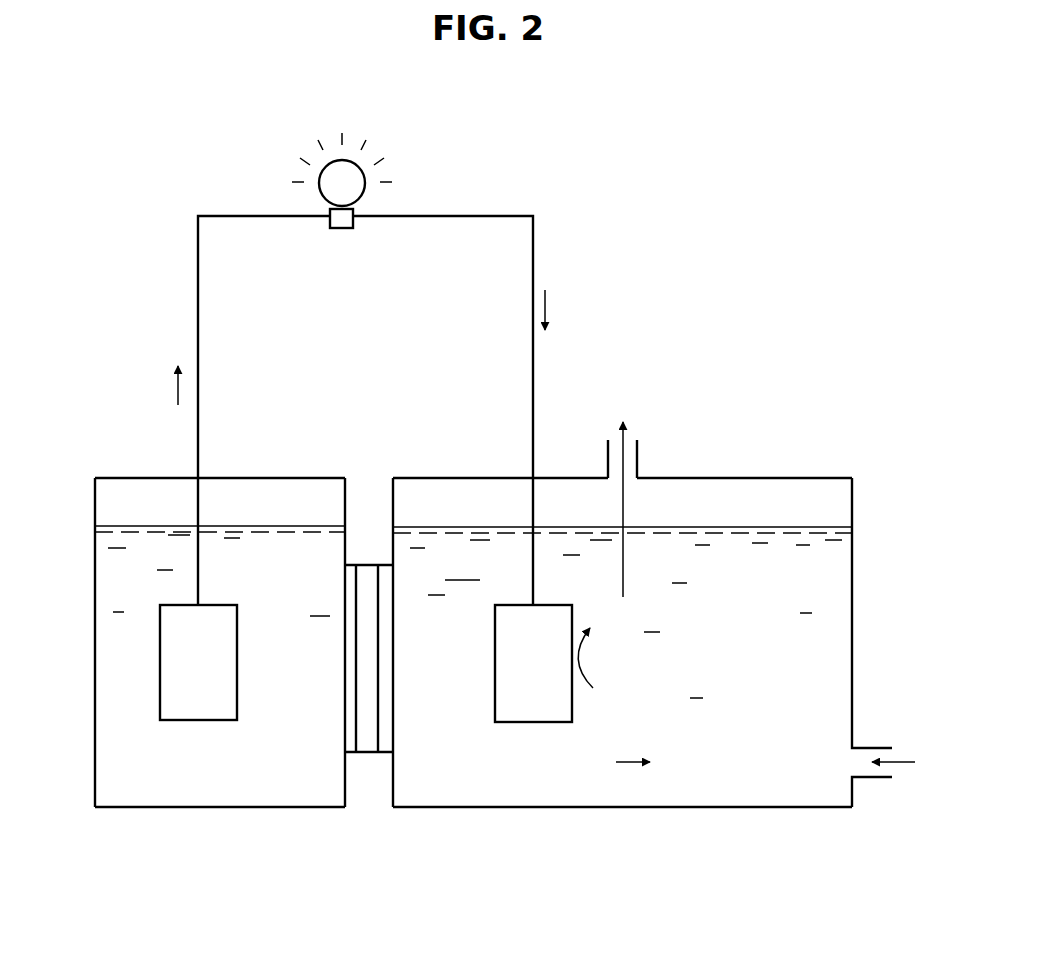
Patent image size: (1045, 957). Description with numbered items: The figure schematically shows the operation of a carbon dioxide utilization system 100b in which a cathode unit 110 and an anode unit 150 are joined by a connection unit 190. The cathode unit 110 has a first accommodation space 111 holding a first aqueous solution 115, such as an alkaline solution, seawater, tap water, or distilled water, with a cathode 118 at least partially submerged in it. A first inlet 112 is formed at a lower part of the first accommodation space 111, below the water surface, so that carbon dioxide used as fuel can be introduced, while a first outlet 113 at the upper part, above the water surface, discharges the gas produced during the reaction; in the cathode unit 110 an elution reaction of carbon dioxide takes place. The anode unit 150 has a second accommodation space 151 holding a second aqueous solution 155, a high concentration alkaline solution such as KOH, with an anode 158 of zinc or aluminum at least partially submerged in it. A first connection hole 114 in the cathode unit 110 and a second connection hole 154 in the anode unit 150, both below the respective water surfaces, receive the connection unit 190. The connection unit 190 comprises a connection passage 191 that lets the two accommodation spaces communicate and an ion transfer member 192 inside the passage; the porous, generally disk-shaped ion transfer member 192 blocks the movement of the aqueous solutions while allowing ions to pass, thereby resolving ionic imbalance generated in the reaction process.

The carbon dioxide utilization system 100b is at (826, 378).
The cathode unit 110 is at (620, 830).
The first accommodation space 111 is at (728, 494).
The first inlet 112 is at (850, 764).
The first outlet 113 is at (630, 483).
The first connection hole 114 is at (394, 642).
The first aqueous solution 115 is at (803, 575).
The cathode 118 is at (505, 688).
The anode unit 150 is at (225, 820).
The second accommodation space 151 is at (123, 501).
The second connection hole 154 is at (341, 600).
The second aqueous solution 155 is at (143, 785).
The anode 158 is at (205, 710).
The connection unit 190 is at (357, 760).
The connection passage 191 is at (348, 558).
The ion transfer member 192 is at (368, 577).